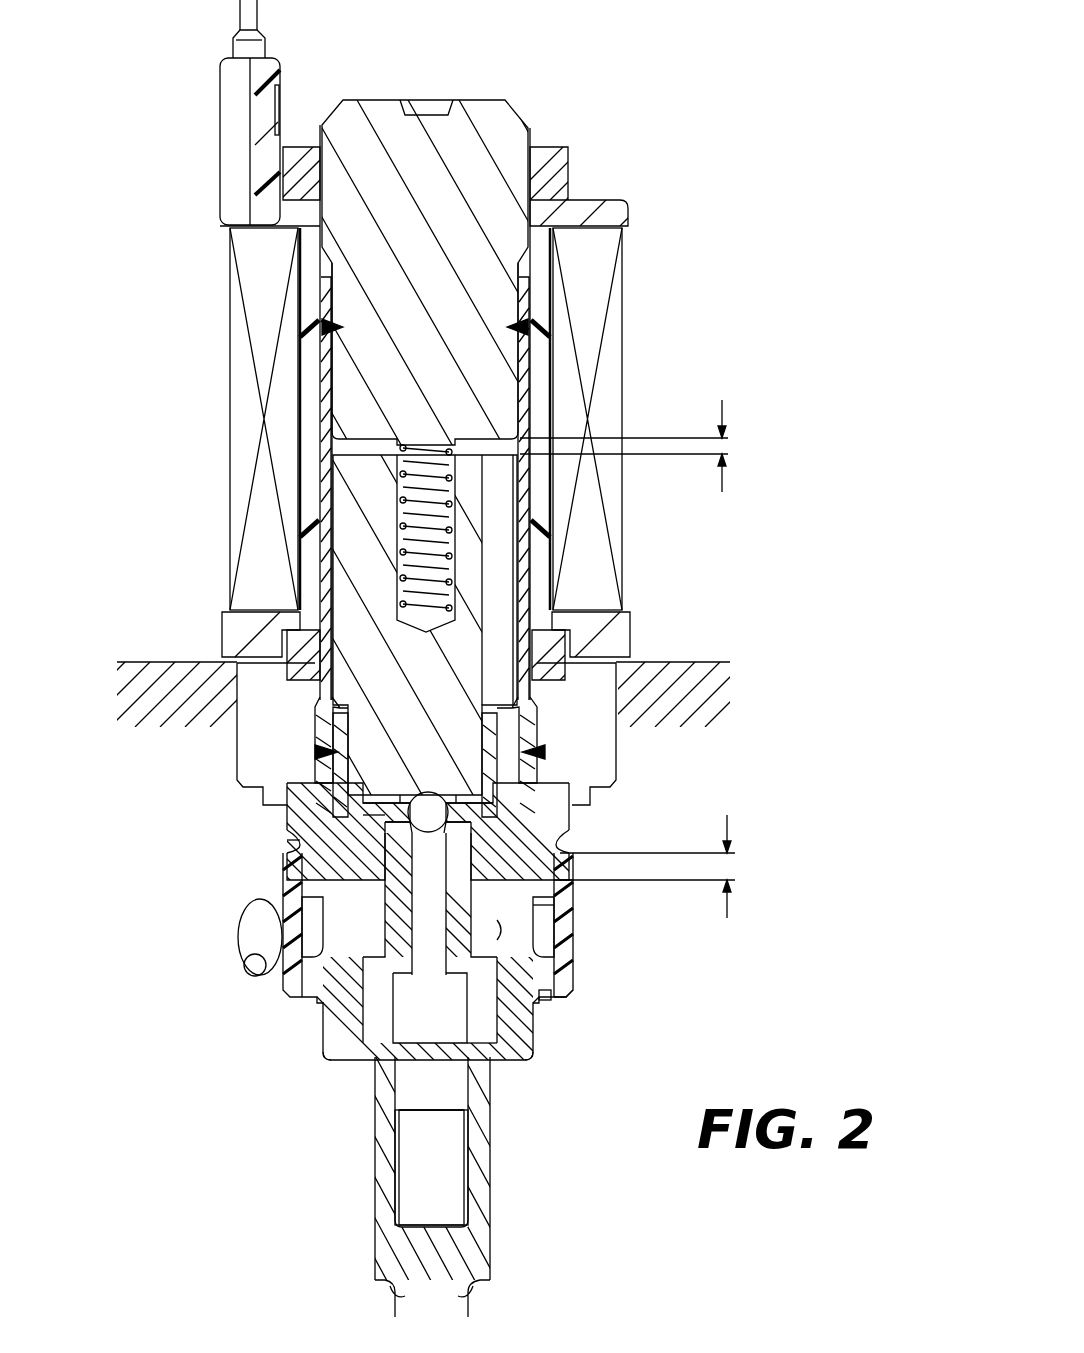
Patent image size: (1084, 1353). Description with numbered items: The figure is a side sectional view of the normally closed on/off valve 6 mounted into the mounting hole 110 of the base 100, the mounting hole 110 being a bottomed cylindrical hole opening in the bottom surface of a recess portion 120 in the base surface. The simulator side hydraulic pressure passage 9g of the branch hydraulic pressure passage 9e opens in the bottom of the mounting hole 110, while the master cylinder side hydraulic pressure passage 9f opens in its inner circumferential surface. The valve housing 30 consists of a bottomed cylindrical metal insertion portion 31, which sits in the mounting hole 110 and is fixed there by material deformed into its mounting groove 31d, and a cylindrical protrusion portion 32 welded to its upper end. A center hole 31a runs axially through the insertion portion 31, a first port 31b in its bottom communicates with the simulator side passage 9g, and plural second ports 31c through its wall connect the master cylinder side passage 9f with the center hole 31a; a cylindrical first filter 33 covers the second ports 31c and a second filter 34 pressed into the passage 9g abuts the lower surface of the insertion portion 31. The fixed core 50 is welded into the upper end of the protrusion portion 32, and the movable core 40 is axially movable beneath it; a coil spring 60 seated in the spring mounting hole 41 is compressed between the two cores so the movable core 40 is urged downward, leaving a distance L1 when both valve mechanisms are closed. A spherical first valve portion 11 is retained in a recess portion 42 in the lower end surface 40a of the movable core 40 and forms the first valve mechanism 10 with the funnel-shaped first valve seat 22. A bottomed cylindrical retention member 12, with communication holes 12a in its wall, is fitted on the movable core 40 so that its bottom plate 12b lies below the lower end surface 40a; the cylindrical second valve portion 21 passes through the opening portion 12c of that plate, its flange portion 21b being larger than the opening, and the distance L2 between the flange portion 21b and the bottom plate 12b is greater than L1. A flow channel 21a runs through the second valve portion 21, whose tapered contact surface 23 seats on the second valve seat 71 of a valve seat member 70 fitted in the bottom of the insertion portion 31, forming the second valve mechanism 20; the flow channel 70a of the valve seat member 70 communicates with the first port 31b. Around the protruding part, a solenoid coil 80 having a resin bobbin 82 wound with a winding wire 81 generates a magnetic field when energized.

The on/off valve 6 is at (482, 100).
The fixed core 50 is at (388, 112).
The solenoid coil 80 is at (218, 152).
The bobbin 82 is at (235, 88).
The winding wire 81 is at (240, 352).
The protrusion portion 32 is at (522, 372).
The movable core 40 is at (347, 488).
The spring mounting hole 41 is at (400, 540).
The coil spring 60 is at (453, 520).
The base 100 is at (162, 663).
The recess portion 120 is at (607, 693).
The valve housing 30 is at (283, 790).
The recess portion 42 is at (416, 798).
The first valve portion 11 is at (431, 805).
The retention member 12 is at (520, 775).
The lower end surface 40a is at (480, 812).
The flange portion 21b is at (470, 820).
The communication holes 12a is at (560, 838).
The first valve mechanism 10 is at (375, 815).
The mounting groove 31d is at (290, 836).
The first valve seat 22 is at (310, 920).
The second valve portion 21 is at (390, 935).
The flow channel 21a is at (430, 1008).
The master cylinder side hydraulic pressure passage 9f is at (243, 940).
The branch hydraulic pressure passage 9e is at (250, 972).
The second valve seat 71 is at (310, 960).
The second ports 31c is at (318, 1000).
The insertion portion 31 is at (347, 1017).
The center hole 31a is at (330, 1057).
The first port 31b is at (470, 1080).
The first filter 33 is at (550, 998).
The mounting hole 110 is at (565, 1003).
The second valve mechanism 20 is at (505, 940).
The opening portion 12c is at (525, 913).
The bottom plate 12b is at (570, 888).
The distance L1 is at (638, 446).
The distance L2 is at (662, 866).
The contact surface 23 is at (505, 1043).
The second filter 34 is at (477, 1167).
The valve seat member 70 is at (368, 1058).
The flow channel 70a is at (415, 1112).
The simulator side hydraulic pressure passage 9g is at (478, 1280).